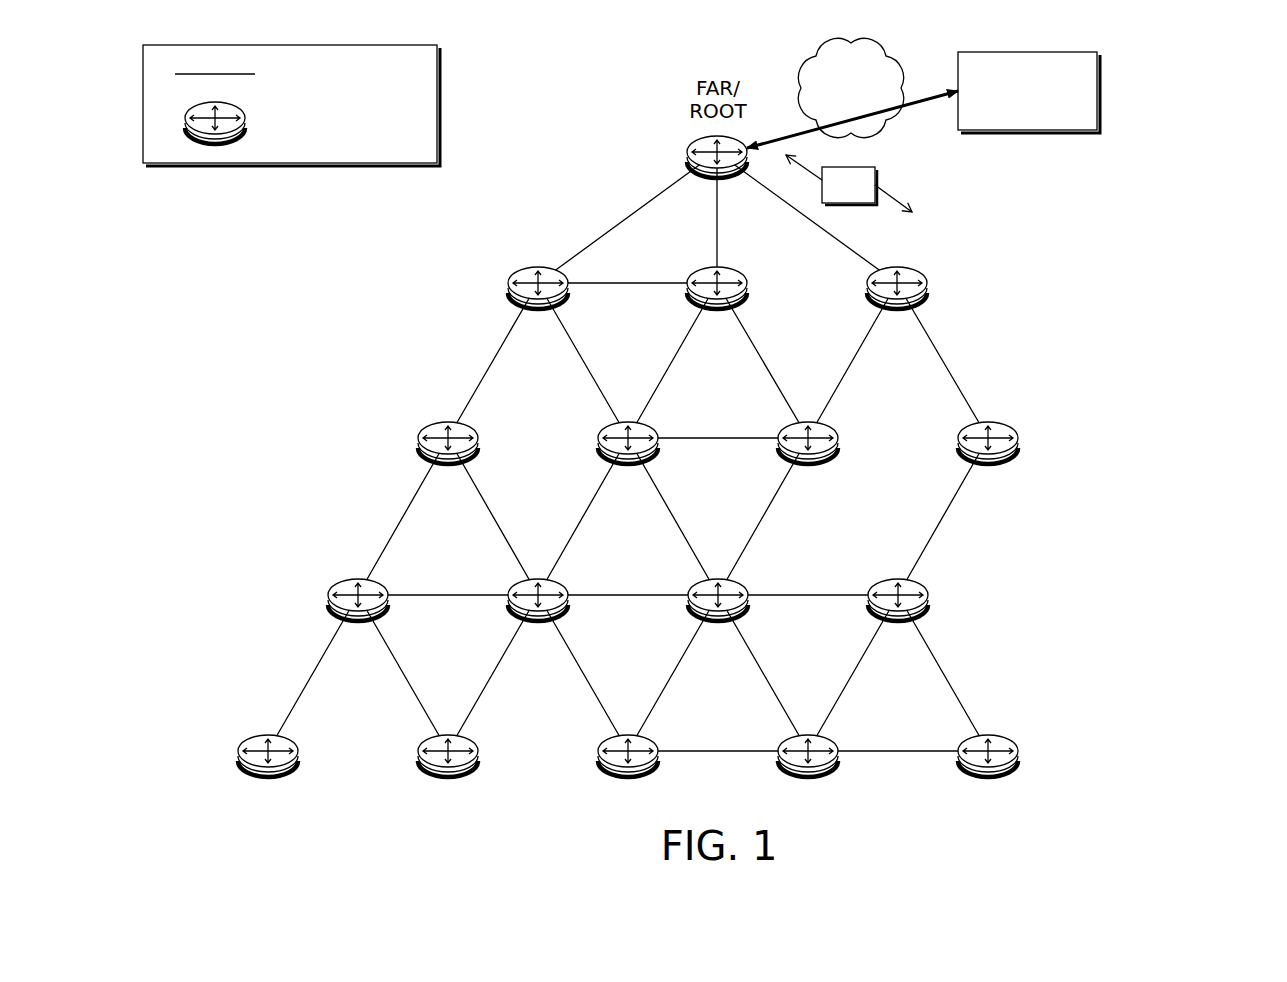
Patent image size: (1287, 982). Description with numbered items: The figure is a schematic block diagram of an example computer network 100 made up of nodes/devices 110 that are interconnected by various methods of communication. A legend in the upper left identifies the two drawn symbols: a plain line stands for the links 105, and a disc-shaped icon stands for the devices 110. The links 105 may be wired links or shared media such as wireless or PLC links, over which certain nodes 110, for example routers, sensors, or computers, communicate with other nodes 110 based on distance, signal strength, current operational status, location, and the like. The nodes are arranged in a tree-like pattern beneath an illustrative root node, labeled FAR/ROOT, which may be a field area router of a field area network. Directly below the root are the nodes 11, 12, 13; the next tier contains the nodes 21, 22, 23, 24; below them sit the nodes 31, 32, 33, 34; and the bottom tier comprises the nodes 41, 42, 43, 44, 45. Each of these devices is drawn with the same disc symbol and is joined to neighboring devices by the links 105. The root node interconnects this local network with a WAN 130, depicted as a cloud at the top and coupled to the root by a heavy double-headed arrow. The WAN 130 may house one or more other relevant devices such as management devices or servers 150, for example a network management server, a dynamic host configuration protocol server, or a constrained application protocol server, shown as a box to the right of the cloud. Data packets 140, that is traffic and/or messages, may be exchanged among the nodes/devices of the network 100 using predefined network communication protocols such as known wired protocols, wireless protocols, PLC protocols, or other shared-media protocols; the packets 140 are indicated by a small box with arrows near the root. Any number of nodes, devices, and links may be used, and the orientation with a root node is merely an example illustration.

The computer network 100 is at (1197, 103).
The links 105 is at (282, 75).
The nodes/devices 110 is at (295, 123).
The WAN 130 is at (831, 105).
The data packets 140 is at (831, 197).
The servers 150 is at (1010, 115).
The node 11 is at (538, 307).
The node 12 is at (717, 307).
The node 13 is at (897, 307).
The node 21 is at (448, 461).
The node 22 is at (628, 461).
The node 23 is at (808, 461).
The node 24 is at (988, 461).
The node 31 is at (358, 617).
The node 32 is at (538, 617).
The node 33 is at (718, 617).
The node 34 is at (898, 617).
The node 41 is at (268, 773).
The node 42 is at (448, 773).
The node 43 is at (628, 773).
The node 44 is at (808, 773).
The node 45 is at (988, 773).